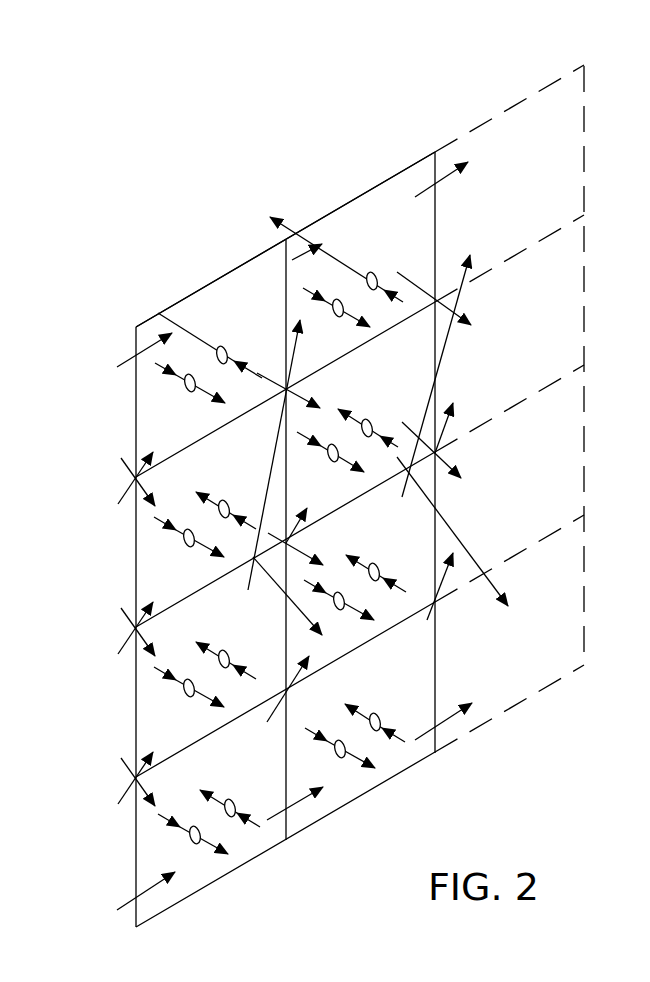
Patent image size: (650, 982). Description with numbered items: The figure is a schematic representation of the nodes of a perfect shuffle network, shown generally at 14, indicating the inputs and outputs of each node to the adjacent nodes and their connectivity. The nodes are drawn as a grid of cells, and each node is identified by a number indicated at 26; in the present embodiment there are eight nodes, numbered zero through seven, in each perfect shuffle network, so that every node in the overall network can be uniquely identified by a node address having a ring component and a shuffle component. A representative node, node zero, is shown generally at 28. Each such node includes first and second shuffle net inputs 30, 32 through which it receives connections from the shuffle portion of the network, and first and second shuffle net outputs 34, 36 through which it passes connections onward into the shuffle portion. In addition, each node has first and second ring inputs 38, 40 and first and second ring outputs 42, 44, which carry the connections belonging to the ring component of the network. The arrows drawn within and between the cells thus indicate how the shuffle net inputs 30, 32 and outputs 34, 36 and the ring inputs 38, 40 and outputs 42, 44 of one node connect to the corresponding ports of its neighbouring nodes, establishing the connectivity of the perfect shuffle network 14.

The array of cells 14 is at (349, 120).
The node number 26 is at (200, 293).
The node 28 is at (254, 241).
The first shuffle net input 30 is at (128, 360).
The second shuffle net input 32 is at (133, 479).
The first shuffle net output 34 is at (292, 258).
The second shuffle net output 36 is at (283, 386).
The first ring input 38 is at (176, 376).
The second ring input 40 is at (220, 351).
The first ring output 42 is at (156, 366).
The second ring output 44 is at (152, 311).